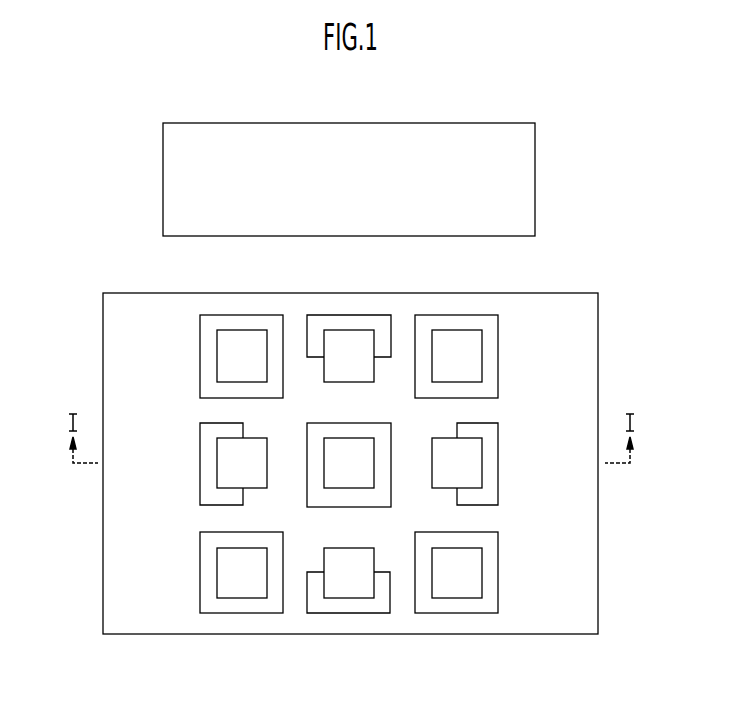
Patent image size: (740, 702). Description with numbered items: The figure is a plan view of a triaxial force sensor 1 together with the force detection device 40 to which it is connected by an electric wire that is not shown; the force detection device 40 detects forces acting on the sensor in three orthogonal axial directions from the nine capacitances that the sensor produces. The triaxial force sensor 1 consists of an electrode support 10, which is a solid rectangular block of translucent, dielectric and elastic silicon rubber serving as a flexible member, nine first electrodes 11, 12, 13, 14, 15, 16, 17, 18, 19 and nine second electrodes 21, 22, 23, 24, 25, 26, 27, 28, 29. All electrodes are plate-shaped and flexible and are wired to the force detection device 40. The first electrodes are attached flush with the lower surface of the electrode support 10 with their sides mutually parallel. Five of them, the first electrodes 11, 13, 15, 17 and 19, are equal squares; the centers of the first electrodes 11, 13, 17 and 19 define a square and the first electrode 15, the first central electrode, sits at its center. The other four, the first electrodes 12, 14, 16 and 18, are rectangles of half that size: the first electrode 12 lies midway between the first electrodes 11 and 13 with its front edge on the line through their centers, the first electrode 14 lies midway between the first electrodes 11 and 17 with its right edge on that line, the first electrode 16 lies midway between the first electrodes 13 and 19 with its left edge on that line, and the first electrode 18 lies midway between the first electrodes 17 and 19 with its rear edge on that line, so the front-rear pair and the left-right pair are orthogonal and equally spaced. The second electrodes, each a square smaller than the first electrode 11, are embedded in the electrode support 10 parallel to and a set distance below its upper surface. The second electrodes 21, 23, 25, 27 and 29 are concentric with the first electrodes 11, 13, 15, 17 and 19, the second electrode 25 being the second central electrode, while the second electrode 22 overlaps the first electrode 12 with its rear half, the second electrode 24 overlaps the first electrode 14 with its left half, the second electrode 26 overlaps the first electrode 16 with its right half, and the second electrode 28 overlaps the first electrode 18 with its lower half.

The triaxial force sensor 1 is at (611, 250).
The electrode support 10 is at (560, 293).
The force detection device 40 is at (493, 123).
The first electrode 11 is at (232, 315).
The first electrode 12 is at (339, 315).
The first electrode 13 is at (447, 315).
The first electrode 14 is at (200, 462).
The first electrode 15 is at (307, 446).
The first electrode 16 is at (498, 462).
The first electrode 17 is at (232, 614).
The first electrode 18 is at (340, 614).
The first electrode 19 is at (445, 614).
The second electrode 21 is at (253, 330).
The second electrode 22 is at (360, 330).
The second electrode 23 is at (468, 330).
The second electrode 24 is at (217, 443).
The second electrode 25 is at (374, 447).
The second electrode 26 is at (482, 446).
The second electrode 27 is at (252, 599).
The second electrode 28 is at (358, 599).
The second electrode 29 is at (465, 599).